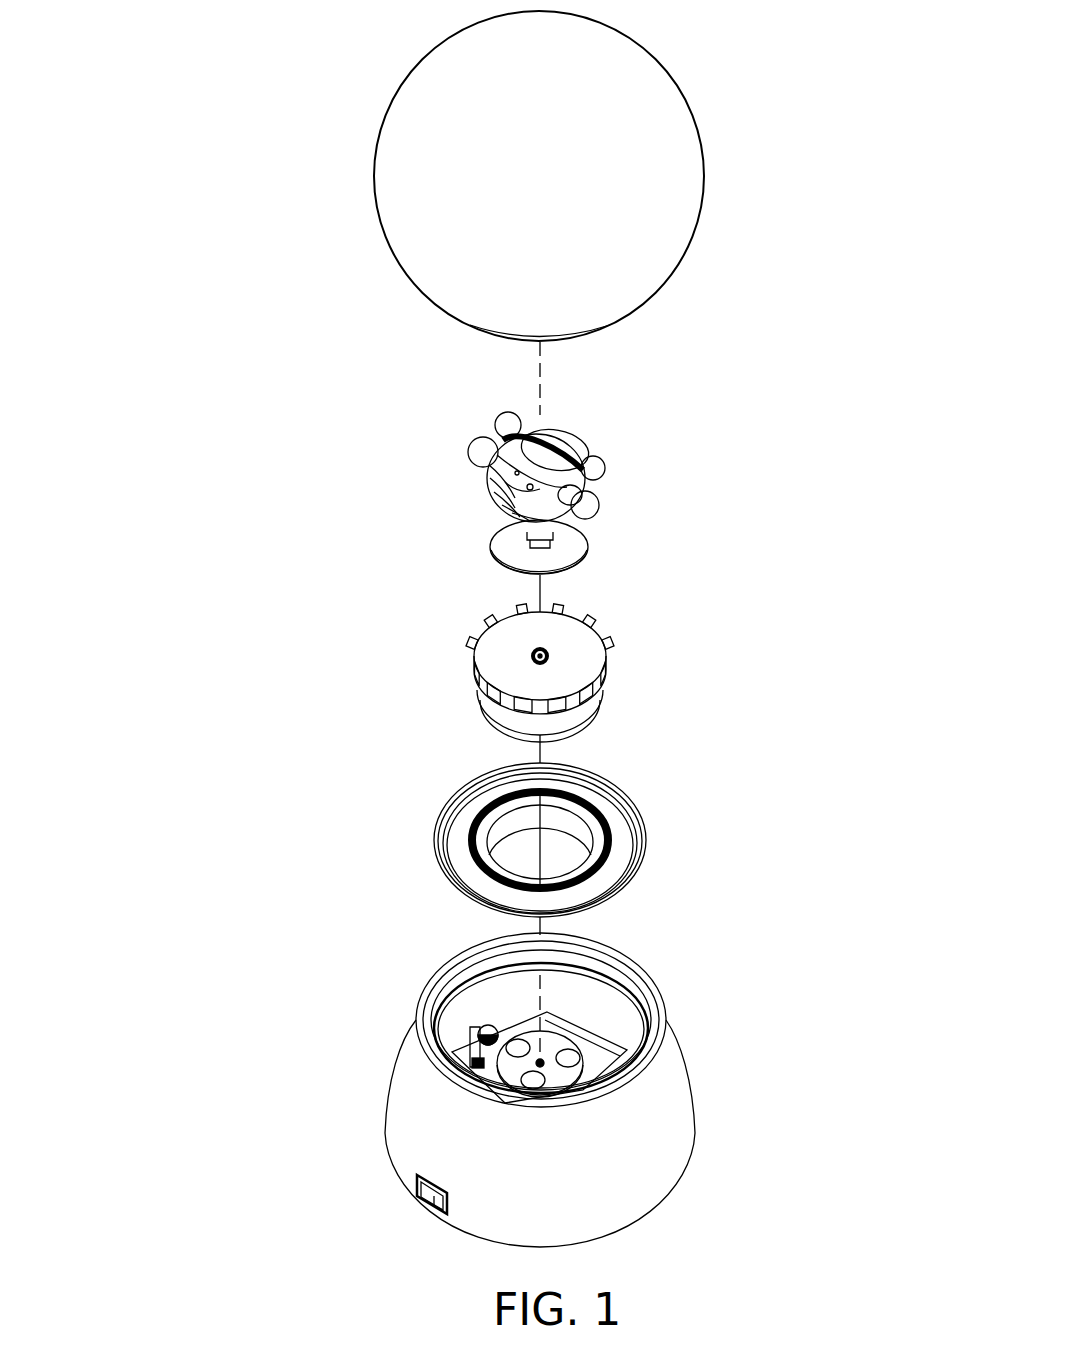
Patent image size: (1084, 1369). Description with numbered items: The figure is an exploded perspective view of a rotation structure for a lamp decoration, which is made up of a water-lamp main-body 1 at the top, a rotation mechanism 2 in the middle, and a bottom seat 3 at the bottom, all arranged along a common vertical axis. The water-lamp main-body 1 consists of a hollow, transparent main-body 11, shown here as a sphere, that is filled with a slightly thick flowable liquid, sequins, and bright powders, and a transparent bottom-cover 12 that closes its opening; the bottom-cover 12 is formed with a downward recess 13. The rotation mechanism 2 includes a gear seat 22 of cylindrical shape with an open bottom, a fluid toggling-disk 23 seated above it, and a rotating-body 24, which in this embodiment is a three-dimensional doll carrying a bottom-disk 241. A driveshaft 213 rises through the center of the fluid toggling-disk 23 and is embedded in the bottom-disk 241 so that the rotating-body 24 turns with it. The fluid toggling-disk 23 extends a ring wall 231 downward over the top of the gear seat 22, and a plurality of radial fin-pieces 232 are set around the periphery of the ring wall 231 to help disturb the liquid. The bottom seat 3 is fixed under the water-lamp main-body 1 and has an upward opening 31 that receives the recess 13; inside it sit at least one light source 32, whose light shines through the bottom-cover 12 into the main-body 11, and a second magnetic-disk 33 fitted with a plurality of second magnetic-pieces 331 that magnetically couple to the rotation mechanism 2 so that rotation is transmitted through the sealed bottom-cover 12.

The water-lamp main-body 1 is at (360, 123).
The main-body 11 is at (692, 188).
The bottom-cover 12 is at (533, 840).
The recess 13 is at (505, 830).
The rotation mechanism 2 is at (398, 578).
The gear seat 22 is at (596, 716).
The fluid toggling-disk 23 is at (517, 645).
The driveshaft 213 is at (545, 652).
The ring wall 231 is at (472, 686).
The radial fin-pieces 232 is at (466, 643).
The rotating-body 24 is at (588, 507).
The bottom-disk 241 is at (587, 545).
The bottom seat 3 is at (538, 1084).
The upward opening 31 is at (608, 975).
The light source 32 is at (480, 1033).
The second magnetic-disk 33 is at (537, 1037).
The second magnetic-pieces 331 is at (528, 1080).